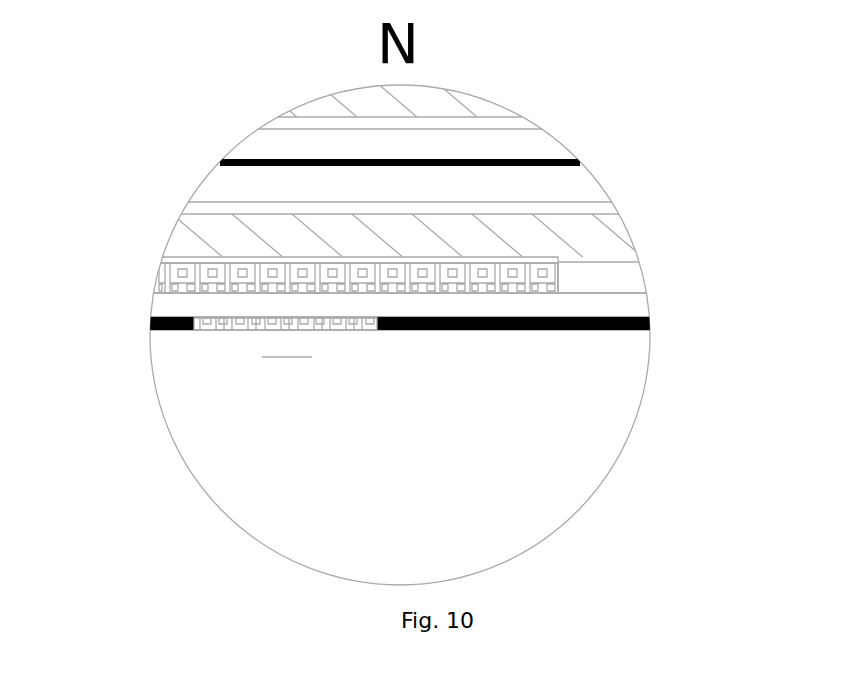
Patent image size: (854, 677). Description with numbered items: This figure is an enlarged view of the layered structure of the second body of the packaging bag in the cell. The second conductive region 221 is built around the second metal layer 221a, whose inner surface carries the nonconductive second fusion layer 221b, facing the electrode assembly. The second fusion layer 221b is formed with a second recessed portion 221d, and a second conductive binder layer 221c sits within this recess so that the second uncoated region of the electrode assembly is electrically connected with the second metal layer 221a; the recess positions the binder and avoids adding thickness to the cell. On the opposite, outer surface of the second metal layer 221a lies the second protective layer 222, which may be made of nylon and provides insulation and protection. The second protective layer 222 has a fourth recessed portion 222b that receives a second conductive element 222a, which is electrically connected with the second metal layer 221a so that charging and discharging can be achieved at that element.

The second conductive region 221 is at (775, 135).
The second metal layer 221a is at (605, 305).
The second fusion layer 221b is at (590, 277).
The second conductive binder layer 221c is at (560, 258).
The second recessed portion 221d is at (530, 282).
The second protective layer 222 is at (172, 330).
The second conductive element 222a is at (217, 327).
The fourth recessed portion 222b is at (195, 328).